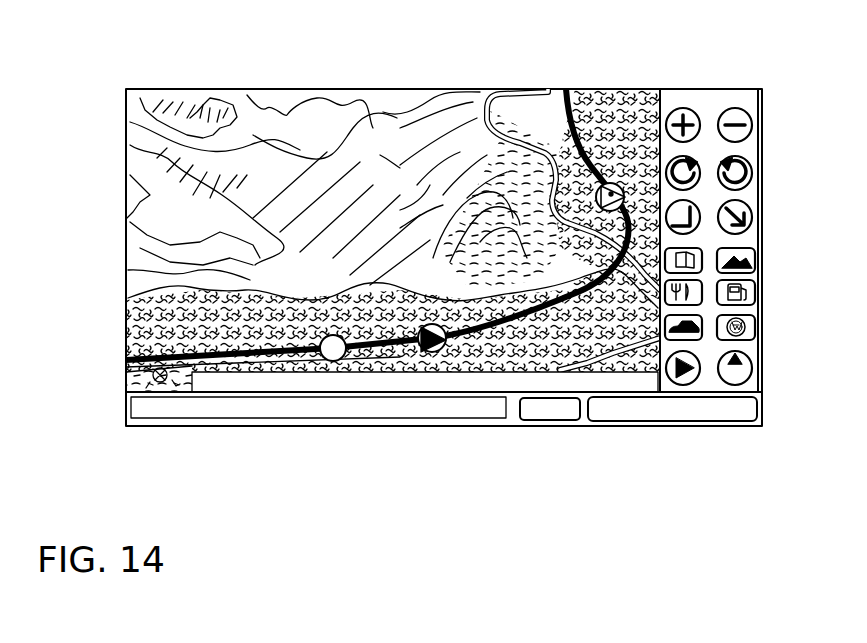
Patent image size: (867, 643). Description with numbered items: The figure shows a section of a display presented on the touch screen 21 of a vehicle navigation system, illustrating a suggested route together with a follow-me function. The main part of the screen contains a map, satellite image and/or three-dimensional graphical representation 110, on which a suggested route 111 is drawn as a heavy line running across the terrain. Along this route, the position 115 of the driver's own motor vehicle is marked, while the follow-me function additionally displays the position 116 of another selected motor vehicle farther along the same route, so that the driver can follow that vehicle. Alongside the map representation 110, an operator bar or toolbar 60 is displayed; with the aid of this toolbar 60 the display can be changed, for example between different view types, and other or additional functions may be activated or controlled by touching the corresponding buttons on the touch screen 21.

The touch screen 21 is at (106, 201).
The 3-D graphical representation 110 is at (285, 287).
The suggested route 111 is at (564, 125).
The position of motor vehicle 115 is at (431, 325).
The position of another selected motor vehicle 116 is at (612, 190).
The toolbar 60 is at (738, 321).